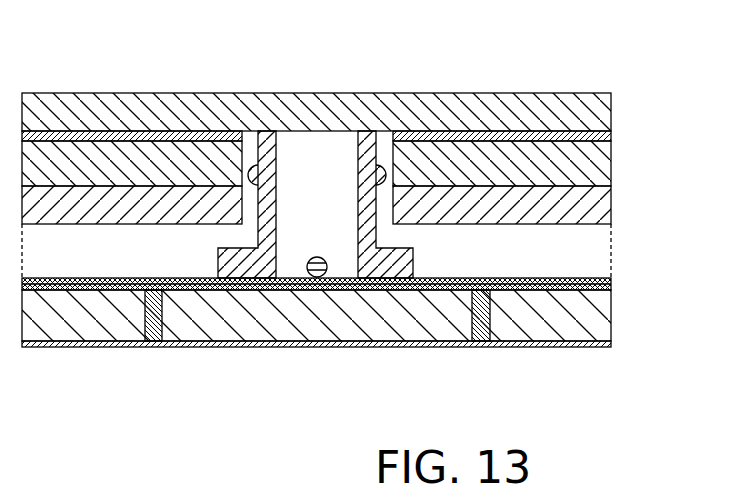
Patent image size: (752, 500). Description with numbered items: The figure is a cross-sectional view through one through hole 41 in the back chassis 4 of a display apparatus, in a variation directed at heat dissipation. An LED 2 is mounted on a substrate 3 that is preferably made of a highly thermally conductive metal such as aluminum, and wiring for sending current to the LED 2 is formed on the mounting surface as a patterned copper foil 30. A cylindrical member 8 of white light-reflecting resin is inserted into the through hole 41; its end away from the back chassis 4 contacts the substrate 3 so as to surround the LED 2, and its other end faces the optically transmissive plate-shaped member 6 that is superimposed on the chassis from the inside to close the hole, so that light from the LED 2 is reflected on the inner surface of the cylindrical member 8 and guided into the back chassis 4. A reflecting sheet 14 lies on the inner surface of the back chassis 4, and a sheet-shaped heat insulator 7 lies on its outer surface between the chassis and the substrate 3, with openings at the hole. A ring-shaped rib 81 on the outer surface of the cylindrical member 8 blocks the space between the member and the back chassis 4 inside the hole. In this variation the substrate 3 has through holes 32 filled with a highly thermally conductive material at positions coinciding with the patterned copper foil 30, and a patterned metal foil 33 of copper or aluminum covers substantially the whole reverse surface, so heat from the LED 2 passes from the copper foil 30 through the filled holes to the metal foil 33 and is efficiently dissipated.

The LED 2 is at (320, 287).
The substrate 3 is at (423, 327).
The back chassis 4 is at (610, 172).
The plate-shaped member 6 is at (202, 92).
The heat insulator 7 is at (580, 222).
The cylindrical member 8 is at (420, 250).
The reflecting sheet 14 is at (611, 135).
The patterned copper foil 30 is at (611, 283).
The through hole 32 is at (490, 318).
The patterned metal foil 33 is at (587, 347).
The through hole 41 is at (383, 165).
The ring-shaped rib 81 is at (252, 168).